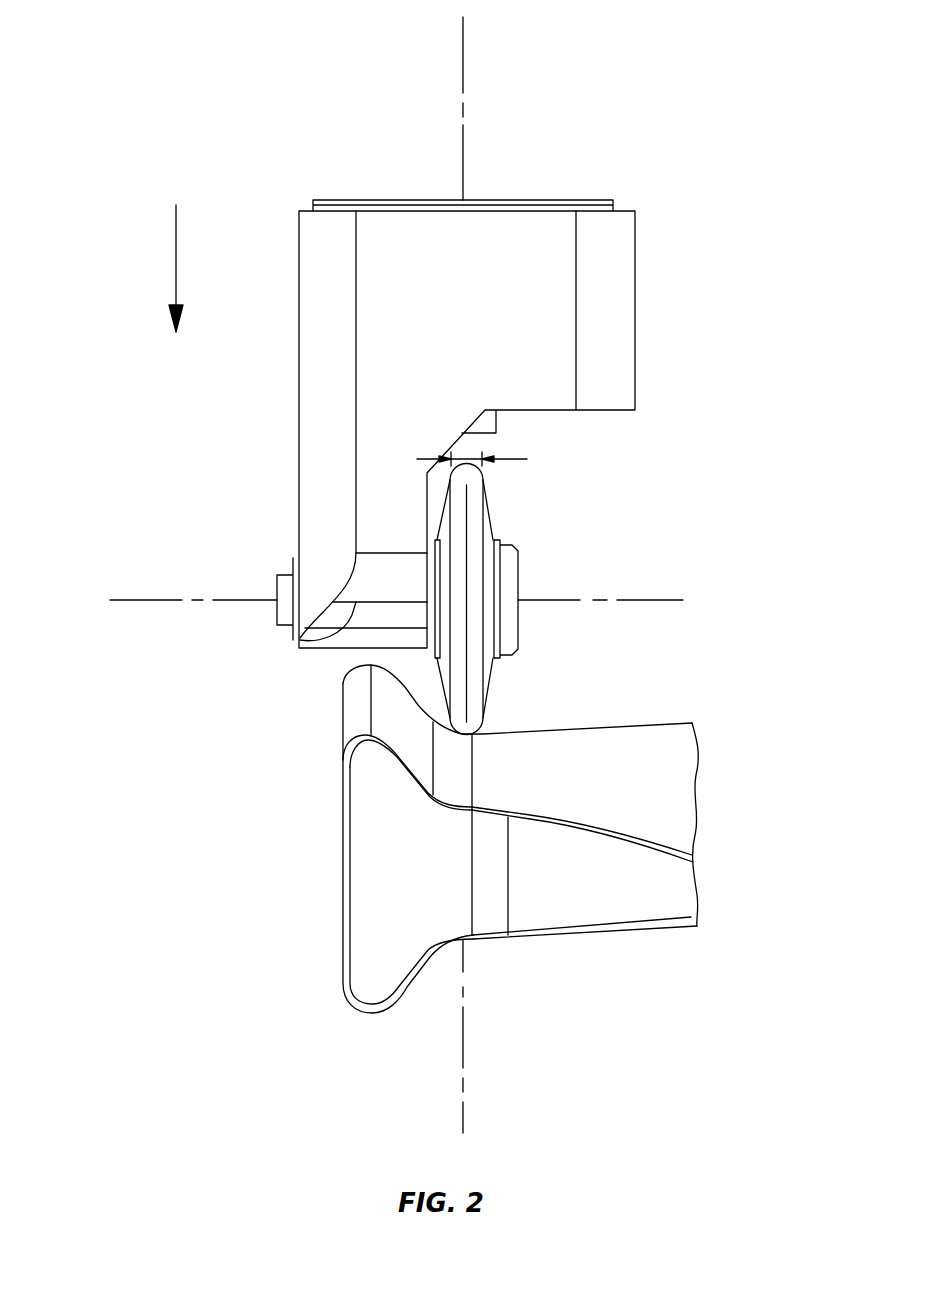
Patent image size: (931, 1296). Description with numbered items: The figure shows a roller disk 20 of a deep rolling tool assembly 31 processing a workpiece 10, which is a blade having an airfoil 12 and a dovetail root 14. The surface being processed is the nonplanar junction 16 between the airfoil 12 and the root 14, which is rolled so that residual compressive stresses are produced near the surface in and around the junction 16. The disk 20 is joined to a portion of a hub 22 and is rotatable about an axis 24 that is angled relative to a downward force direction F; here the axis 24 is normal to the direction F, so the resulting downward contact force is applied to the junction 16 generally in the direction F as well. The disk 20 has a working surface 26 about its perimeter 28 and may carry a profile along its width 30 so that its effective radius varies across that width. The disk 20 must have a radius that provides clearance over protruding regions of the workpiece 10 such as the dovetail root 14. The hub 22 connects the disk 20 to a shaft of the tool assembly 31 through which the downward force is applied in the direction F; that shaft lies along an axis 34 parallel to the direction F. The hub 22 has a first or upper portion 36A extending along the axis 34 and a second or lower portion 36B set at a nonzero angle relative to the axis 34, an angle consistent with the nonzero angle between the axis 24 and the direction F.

The workpiece 10 is at (521, 824).
The airfoil 12 is at (602, 910).
The dovetail root 14 is at (375, 895).
The junction 16 is at (450, 767).
The roller disk 20 is at (455, 583).
The hub 22 is at (469, 426).
The axis 24 is at (666, 598).
The working surface 26 is at (478, 706).
The perimeter 28 is at (420, 659).
The width 30 is at (517, 459).
The tool assembly 31 is at (469, 404).
The axis 34 is at (463, 33).
The first/upper portion 36A is at (635, 259).
The second/lower portion 36B is at (296, 637).
The downward force direction F is at (176, 272).